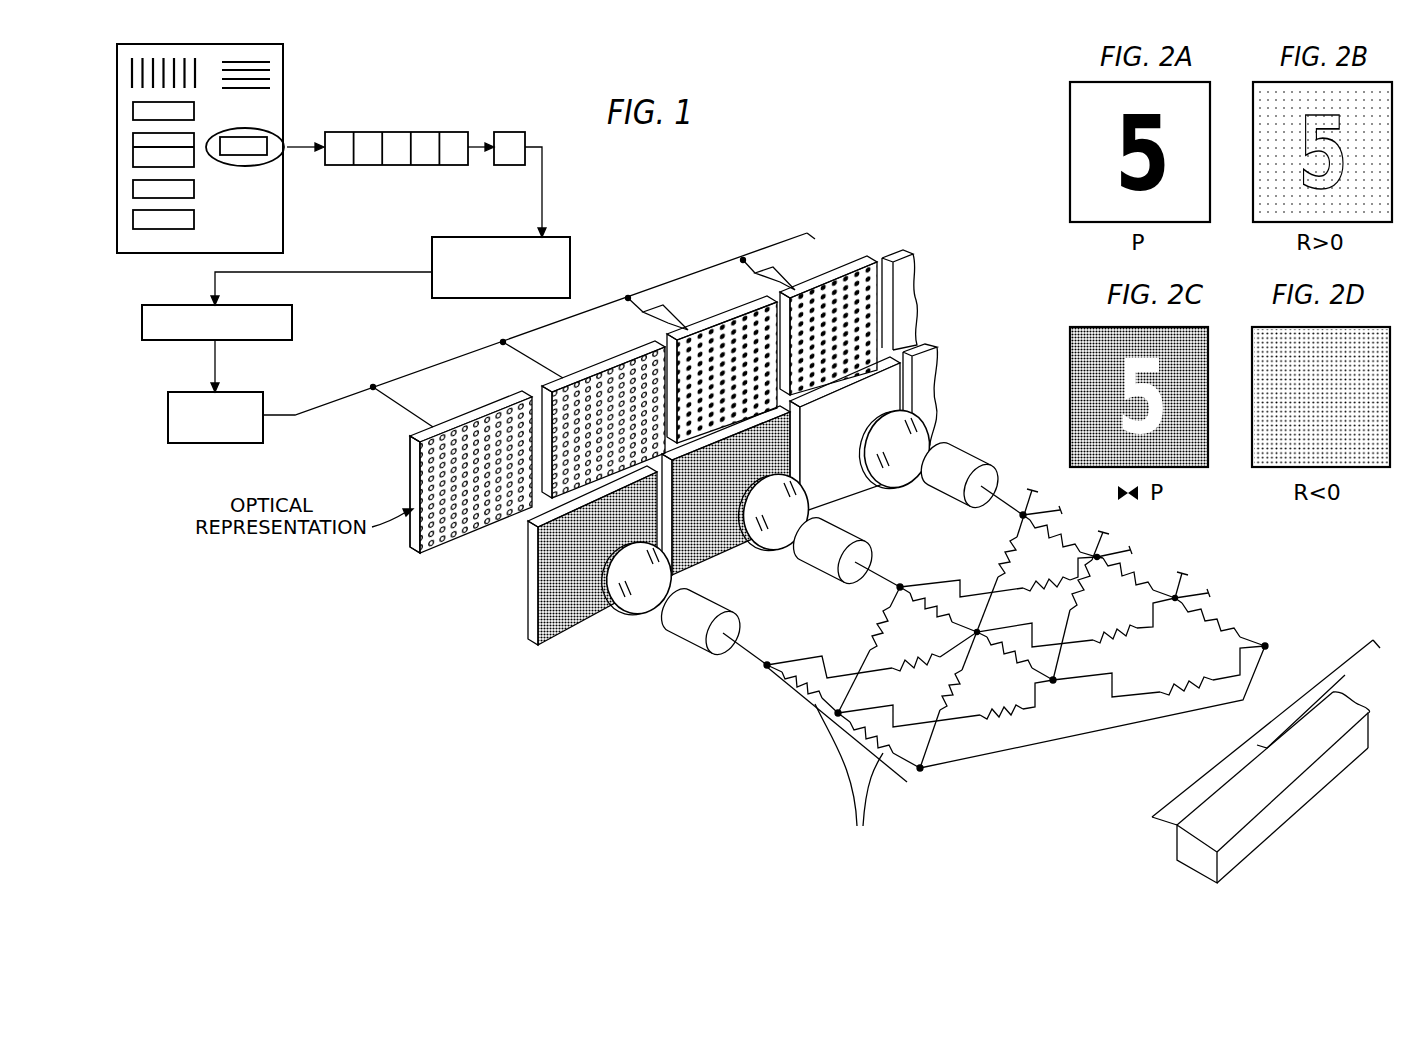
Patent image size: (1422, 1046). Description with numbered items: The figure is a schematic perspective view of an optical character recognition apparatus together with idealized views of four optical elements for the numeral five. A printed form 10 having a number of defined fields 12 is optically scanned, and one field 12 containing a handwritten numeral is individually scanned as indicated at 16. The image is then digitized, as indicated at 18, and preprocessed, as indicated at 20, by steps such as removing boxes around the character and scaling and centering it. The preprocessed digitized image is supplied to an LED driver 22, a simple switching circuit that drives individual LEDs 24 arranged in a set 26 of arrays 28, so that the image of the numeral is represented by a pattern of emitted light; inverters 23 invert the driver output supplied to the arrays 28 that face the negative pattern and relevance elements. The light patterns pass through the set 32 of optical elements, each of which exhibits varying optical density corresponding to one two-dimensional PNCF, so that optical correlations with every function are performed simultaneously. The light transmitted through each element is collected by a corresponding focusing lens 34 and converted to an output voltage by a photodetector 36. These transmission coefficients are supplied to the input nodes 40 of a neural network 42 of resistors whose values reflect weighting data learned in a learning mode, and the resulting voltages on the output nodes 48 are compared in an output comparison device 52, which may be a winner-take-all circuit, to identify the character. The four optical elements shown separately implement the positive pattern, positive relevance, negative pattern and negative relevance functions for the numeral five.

The printed form 10 is at (285, 74).
The defined fields 12 is at (194, 112).
The individual scanning 16 is at (513, 132).
The digitizing step 18 is at (492, 237).
The preprocessing step 20 is at (292, 321).
The LED driver 22 is at (168, 426).
The inverters 23 is at (755, 277).
The LEDs 24 is at (428, 445).
The set of arrays 26 is at (406, 476).
The arrays of LEDs 28 is at (472, 417).
The set of optical elements 32 is at (526, 585).
The focusing lens 34 is at (657, 655).
The photodetector 36 is at (686, 648).
The input nodes 40 is at (769, 672).
The neural network 42 is at (817, 733).
The output nodes 48 is at (1265, 646).
The output comparison device 52 is at (1137, 862).